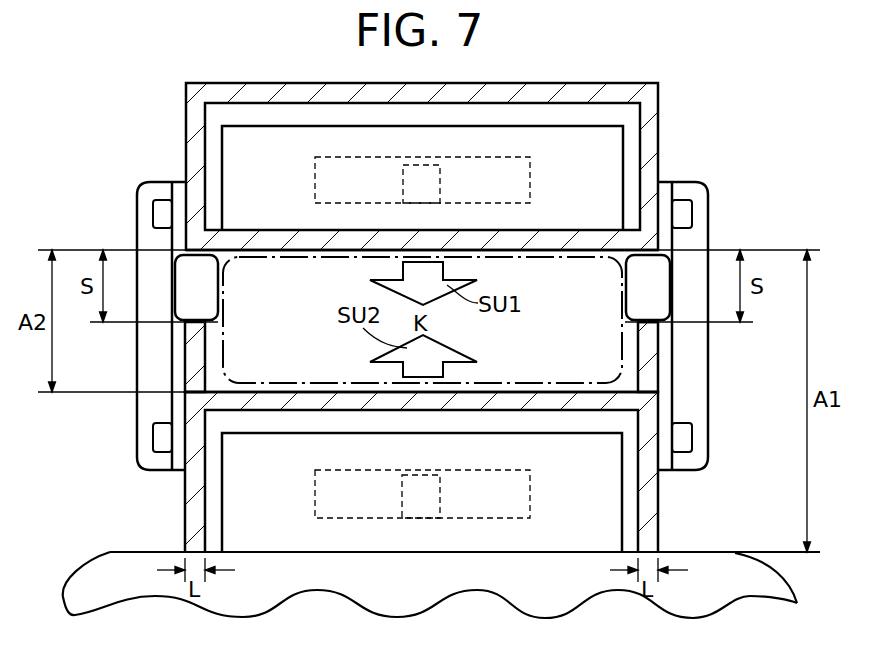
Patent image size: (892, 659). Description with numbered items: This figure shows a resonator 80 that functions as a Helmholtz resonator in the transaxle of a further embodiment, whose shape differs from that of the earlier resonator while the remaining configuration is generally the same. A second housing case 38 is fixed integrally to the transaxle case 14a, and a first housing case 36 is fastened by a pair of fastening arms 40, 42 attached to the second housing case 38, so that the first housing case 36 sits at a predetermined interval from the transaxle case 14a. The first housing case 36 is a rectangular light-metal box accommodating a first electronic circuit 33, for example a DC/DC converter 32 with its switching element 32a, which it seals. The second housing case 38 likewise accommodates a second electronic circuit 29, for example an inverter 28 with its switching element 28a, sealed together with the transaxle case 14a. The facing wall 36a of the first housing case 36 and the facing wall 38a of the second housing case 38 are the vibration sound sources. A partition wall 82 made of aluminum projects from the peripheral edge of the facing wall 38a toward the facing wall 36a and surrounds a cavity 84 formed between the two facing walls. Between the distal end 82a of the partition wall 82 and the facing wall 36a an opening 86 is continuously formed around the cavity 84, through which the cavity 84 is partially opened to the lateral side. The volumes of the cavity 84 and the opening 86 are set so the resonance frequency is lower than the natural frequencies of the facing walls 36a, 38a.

The transaxle case 14a is at (108, 573).
The inverter 28 is at (357, 493).
The switching element 28a is at (423, 513).
The second electronic circuit 29 is at (273, 523).
The DC/DC converter 32 is at (318, 182).
The switching element 32a is at (400, 185).
The first electronic circuit 33 is at (258, 150).
The first housing case 36 is at (620, 60).
The facing wall 36a is at (441, 245).
The second housing case 38 is at (172, 502).
The facing wall 38a is at (488, 405).
The fastening arm 40 is at (152, 197).
The fastening arm 42 is at (695, 193).
The resonator 80 is at (158, 363).
The partition wall 82 is at (648, 357).
The distal end 82a is at (662, 320).
The cavity 84 is at (333, 380).
The opening 86 is at (210, 308).